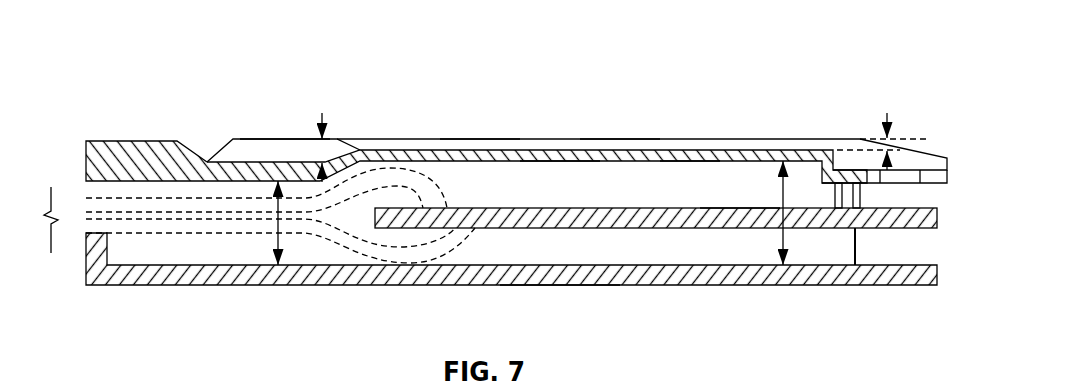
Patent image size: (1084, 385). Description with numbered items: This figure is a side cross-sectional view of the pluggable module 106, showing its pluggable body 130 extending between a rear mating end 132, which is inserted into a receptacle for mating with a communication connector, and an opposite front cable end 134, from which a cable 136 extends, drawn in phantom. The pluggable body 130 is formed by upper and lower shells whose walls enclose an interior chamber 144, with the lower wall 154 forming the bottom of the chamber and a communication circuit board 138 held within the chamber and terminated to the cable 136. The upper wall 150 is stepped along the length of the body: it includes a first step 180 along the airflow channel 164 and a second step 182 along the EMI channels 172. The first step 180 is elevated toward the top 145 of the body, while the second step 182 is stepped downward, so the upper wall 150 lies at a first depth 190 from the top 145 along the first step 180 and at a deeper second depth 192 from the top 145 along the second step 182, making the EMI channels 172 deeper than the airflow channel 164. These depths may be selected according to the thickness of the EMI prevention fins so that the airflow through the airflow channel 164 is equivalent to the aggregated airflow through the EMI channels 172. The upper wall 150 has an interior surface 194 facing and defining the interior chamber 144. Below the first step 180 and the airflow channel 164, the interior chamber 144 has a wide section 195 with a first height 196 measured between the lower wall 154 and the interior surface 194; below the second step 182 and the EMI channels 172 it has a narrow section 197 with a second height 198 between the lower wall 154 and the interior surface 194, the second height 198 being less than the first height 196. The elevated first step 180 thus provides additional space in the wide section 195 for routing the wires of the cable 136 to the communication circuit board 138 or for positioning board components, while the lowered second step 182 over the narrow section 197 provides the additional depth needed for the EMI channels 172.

The pluggable module 106 is at (327, 50).
The pluggable body 130 is at (168, 285).
The mating end 132 is at (950, 165).
The cable end 134 is at (86, 157).
The cable 136 is at (62, 222).
The communication circuit board 138 is at (657, 227).
The interior chamber 144 is at (735, 187).
The top 145 is at (615, 138).
The upper wall 150 is at (290, 172).
The lower wall 154 is at (555, 287).
The airflow channel 164 is at (530, 144).
The EMI channel 172 is at (308, 147).
The first step 180 is at (472, 152).
The second step 182 is at (226, 153).
The first depth 190 is at (885, 120).
The second depth 192 is at (324, 116).
The interior surface 194 is at (545, 163).
The wide section 195 is at (687, 181).
The first height 196 is at (788, 238).
The narrow section 197 is at (188, 190).
The second height 198 is at (281, 236).